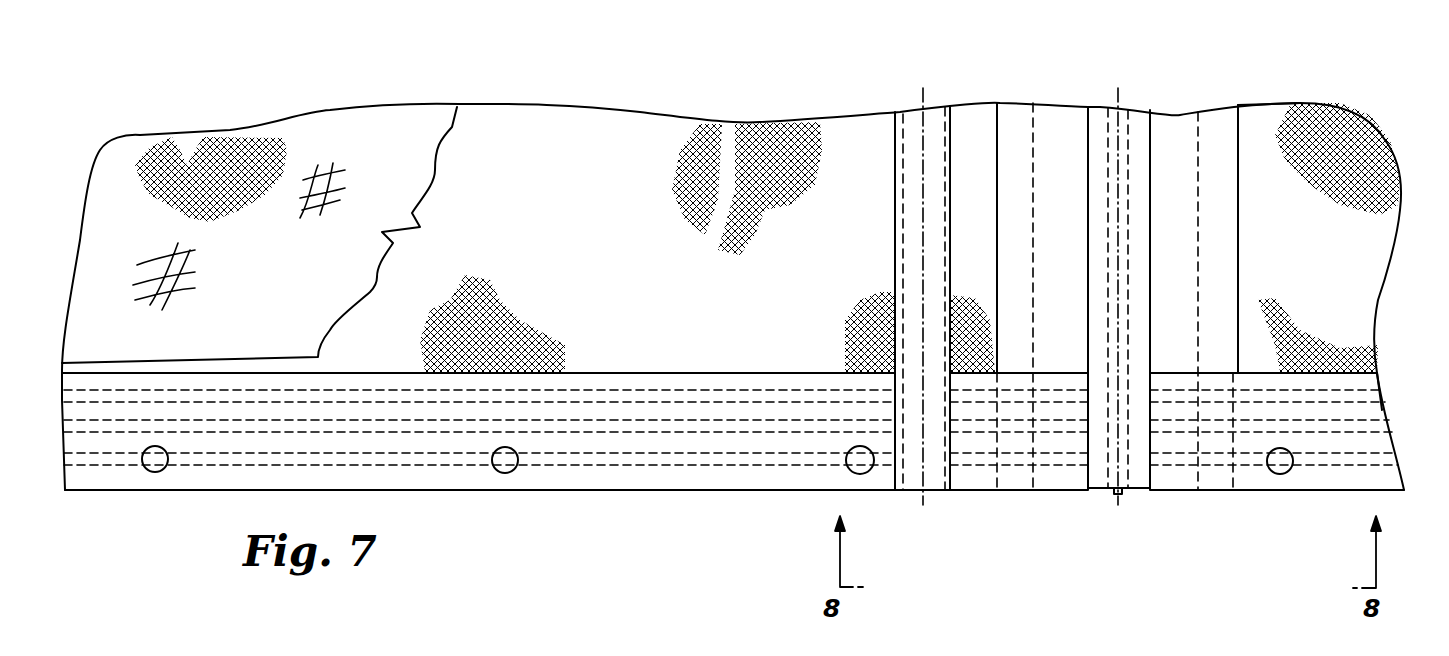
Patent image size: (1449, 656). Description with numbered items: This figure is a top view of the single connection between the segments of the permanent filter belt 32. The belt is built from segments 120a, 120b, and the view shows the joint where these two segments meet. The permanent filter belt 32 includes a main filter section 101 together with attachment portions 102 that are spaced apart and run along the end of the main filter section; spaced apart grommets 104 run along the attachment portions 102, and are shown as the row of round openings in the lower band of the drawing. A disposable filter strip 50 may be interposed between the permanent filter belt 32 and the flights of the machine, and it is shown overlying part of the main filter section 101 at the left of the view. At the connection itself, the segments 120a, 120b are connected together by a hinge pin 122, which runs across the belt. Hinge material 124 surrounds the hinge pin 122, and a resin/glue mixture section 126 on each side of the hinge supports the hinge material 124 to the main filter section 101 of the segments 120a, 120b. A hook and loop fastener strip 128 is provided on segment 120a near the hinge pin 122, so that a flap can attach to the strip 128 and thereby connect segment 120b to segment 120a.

The permanent filter belt 32 is at (128, 125).
The disposable filter strip 50 is at (338, 138).
The main filter section 101 is at (512, 140).
The attachment portions 102 is at (439, 417).
The grommets 104 is at (157, 466).
The segment 120a is at (865, 142).
The segment 120b is at (1350, 280).
The hinge pin 122 is at (1122, 492).
The hinge material 124 is at (1137, 125).
The resin/glue mixture section 126 is at (1055, 128).
The hook and loop fastener strip 128 is at (933, 482).